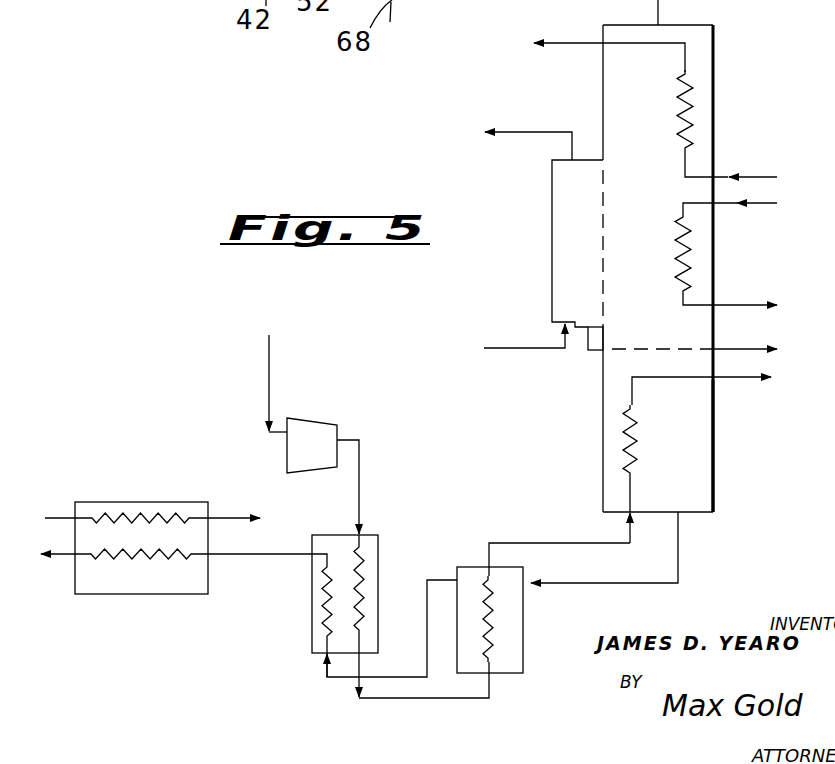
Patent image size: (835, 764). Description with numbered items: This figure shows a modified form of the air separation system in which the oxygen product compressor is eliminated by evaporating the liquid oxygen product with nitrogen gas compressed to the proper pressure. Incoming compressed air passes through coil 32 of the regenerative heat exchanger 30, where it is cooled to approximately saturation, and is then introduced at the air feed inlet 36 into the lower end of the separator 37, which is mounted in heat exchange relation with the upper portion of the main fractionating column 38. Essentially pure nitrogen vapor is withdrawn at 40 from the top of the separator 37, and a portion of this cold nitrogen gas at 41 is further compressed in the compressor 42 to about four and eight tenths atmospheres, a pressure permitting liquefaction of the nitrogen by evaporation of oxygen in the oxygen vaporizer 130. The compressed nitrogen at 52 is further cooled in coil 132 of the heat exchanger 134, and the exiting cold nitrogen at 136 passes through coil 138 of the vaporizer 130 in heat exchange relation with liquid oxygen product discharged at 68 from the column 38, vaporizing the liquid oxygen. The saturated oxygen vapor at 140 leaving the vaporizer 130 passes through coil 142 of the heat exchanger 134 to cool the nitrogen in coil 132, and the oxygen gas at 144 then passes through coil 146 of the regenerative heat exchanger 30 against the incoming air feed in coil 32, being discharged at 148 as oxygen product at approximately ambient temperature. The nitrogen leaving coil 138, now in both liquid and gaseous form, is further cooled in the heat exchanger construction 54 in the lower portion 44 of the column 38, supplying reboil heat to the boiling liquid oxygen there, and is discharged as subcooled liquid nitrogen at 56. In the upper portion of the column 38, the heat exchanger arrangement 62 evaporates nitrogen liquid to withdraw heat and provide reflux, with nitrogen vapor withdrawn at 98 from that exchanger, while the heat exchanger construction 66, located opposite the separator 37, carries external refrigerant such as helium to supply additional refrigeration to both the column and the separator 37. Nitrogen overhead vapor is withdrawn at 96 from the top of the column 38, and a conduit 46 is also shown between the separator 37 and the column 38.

The regenerative heat exchanger 30 is at (142, 465).
The coil 32 is at (180, 512).
The air feed inlet 36 is at (524, 350).
The separator 37 is at (552, 268).
The main fractionating column 38 is at (716, 142).
The nitrogen vapor withdrawal 40 is at (569, 112).
The cold nitrogen gas portion 41 is at (270, 390).
The compressor 42 is at (328, 425).
The lower portion of fractionating column 44 is at (713, 461).
The transfer conduit 46 is at (591, 353).
The compressed nitrogen introduction point 52 is at (362, 493).
The heat exchanger construction 54 is at (628, 462).
The subcooled liquid nitrogen discharge 56 is at (740, 380).
The heat exchanger arrangement 62 is at (700, 98).
The heat exchanger construction 66 is at (693, 263).
The liquid oxygen product discharge 68 is at (680, 552).
The nitrogen overhead vapor withdrawal 96 is at (660, 10).
The nitrogen vapor withdrawal 98 is at (587, 20).
The oxygen vaporizer 130 is at (513, 663).
The coil 132 is at (355, 592).
The heat exchanger 134 is at (374, 540).
The compressed cold nitrogen outlet 136 is at (410, 700).
The coil 138 is at (523, 606).
The saturated oxygen vapor outlet 140 is at (427, 641).
The coil 142 is at (323, 614).
The oxygen gas outlet 144 is at (248, 557).
The coil 146 is at (160, 560).
The oxygen product discharge 148 is at (70, 556).